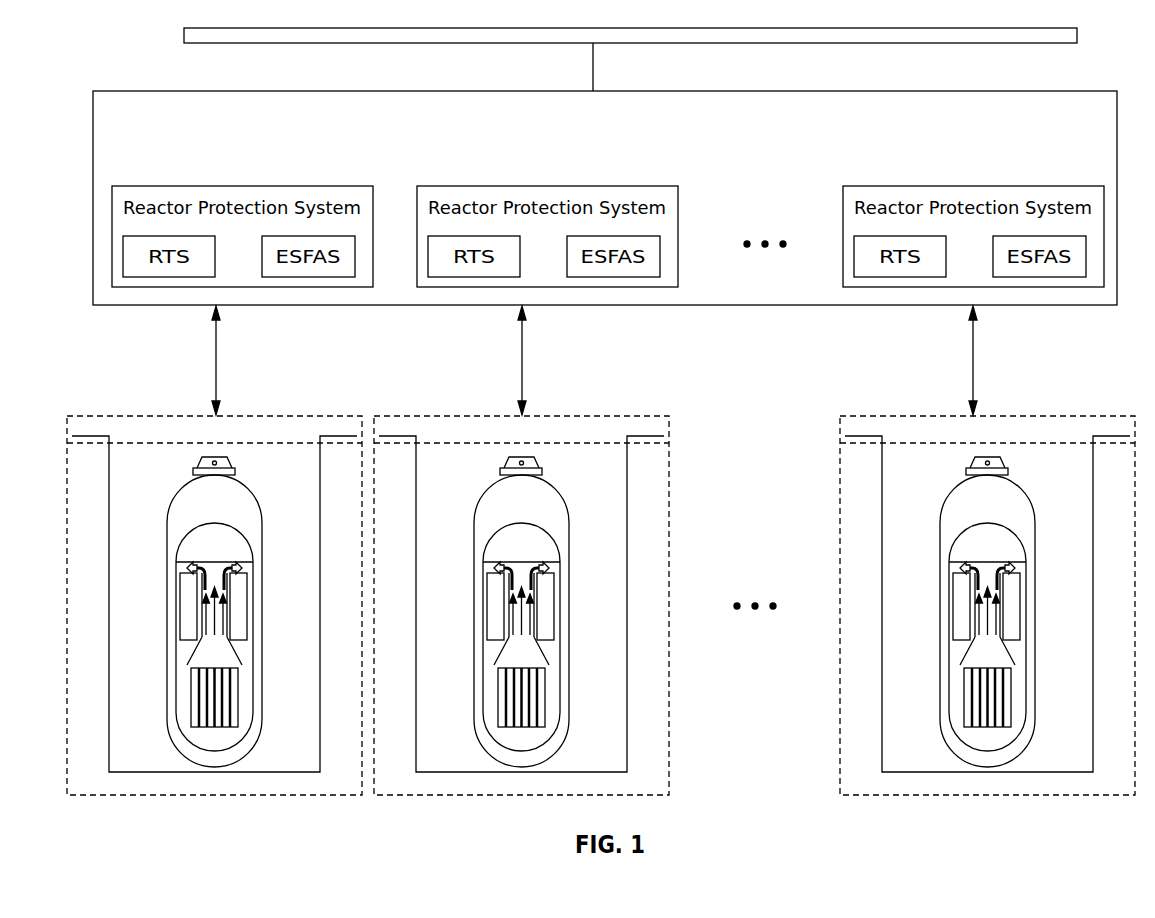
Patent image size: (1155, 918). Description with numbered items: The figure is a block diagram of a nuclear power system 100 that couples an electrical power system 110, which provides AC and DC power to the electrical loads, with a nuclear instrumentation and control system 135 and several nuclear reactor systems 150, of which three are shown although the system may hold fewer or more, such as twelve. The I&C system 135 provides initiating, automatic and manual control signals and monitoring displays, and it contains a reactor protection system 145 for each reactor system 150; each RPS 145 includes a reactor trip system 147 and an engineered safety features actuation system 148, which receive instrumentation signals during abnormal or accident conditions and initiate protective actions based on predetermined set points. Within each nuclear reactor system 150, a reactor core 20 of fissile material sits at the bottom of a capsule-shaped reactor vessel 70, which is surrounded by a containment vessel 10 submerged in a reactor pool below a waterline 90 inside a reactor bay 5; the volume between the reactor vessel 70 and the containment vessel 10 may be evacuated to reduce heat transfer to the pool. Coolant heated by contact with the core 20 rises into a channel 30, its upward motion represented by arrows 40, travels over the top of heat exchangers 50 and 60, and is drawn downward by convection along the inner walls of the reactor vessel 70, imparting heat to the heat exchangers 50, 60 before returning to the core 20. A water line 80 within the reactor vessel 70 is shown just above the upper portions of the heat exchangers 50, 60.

The nuclear power system 100 is at (155, 68).
The electrical power system 110 is at (1070, 46).
The nuclear instrumentation and control (I&C) system 135 is at (835, 91).
The reactor protection system (RPS) 145 is at (112, 255).
The reactor trip system (RTS) 147 is at (515, 291).
The engineered safety features actuation system (ESFAS) 148 is at (684, 291).
The nuclear reactor system 150 is at (601, 592).
The waterline 90 is at (601, 416).
The reactor bay 5 is at (601, 604).
The containment vessel 10 is at (601, 643).
The reactor vessel 70 is at (631, 637).
The water line 80 is at (601, 527).
The heat exchanger 50 is at (549, 601).
The heat exchanger 60 is at (651, 601).
The arrows 40 is at (640, 614).
The channel 30 is at (601, 651).
The reactor core 20 is at (568, 700).